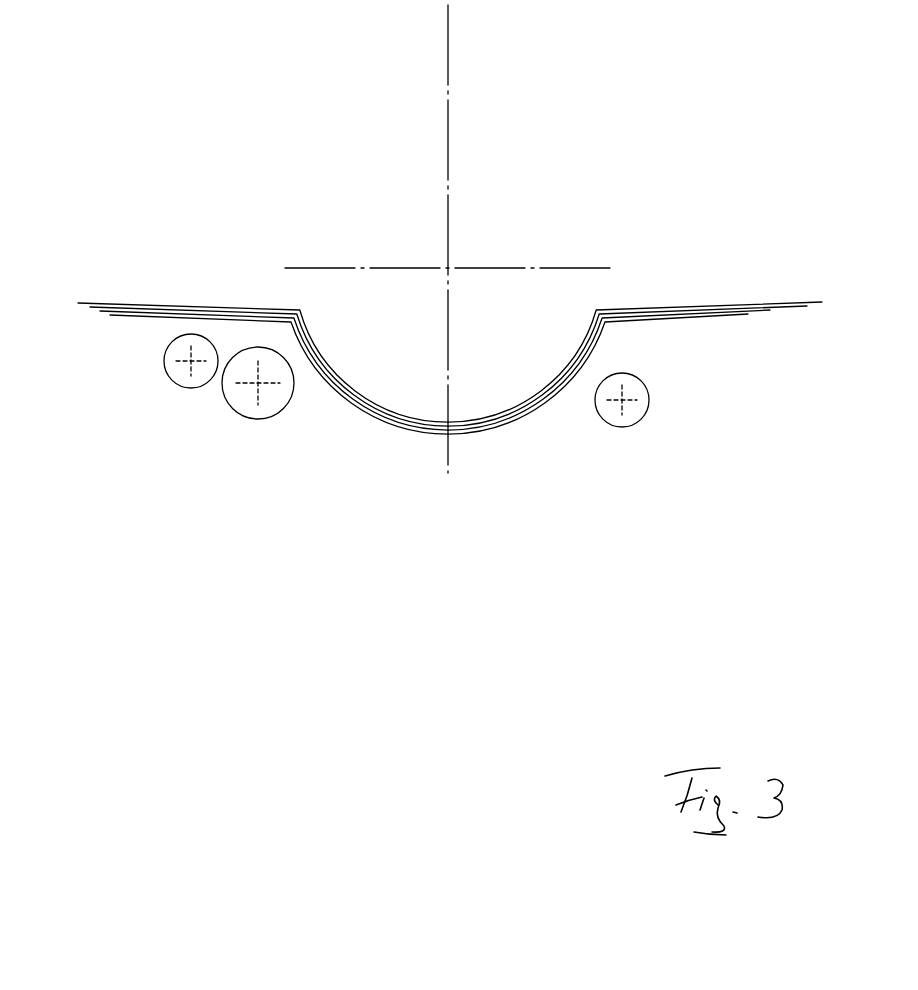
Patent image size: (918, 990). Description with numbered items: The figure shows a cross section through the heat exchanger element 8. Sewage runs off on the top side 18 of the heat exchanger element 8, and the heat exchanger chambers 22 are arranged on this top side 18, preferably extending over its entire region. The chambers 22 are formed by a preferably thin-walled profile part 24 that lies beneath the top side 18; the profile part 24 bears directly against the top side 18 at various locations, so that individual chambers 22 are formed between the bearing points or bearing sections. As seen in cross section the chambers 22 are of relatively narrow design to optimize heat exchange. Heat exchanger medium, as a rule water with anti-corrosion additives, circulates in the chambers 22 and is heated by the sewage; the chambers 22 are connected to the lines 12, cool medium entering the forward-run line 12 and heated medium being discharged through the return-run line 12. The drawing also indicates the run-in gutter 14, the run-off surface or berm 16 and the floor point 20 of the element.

The heat exchanger element 8 is at (385, 458).
The forward-run, return-run and distributor lines 12 is at (194, 386).
The run-in gutter 14 is at (516, 377).
The run-off surface or berm 16 is at (205, 312).
The top side of heat exchanger element 18 is at (326, 360).
The floor point 20 is at (450, 437).
The heat exchanger chamber 22 is at (160, 318).
The profile part 24 is at (600, 337).